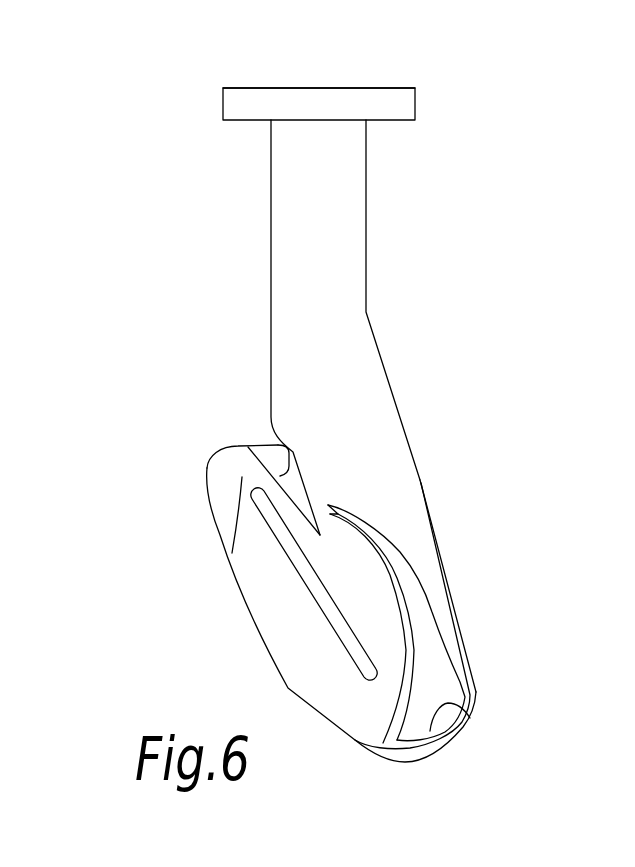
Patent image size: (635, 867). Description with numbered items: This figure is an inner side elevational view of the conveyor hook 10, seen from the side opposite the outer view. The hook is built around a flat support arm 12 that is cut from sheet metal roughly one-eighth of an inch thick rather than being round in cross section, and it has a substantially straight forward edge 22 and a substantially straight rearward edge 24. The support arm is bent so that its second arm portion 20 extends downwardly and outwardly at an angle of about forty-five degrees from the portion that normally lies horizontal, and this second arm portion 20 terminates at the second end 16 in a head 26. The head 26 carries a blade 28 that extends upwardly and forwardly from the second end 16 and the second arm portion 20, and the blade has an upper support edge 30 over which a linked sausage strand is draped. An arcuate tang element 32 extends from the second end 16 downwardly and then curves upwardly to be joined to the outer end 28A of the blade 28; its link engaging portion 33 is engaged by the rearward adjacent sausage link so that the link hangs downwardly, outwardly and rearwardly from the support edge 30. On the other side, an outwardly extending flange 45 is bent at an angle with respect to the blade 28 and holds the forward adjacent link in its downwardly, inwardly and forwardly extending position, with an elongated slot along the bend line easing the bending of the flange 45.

The conveyor hook 10 is at (510, 132).
The support arm 12 is at (270, 270).
The second end 16 is at (372, 495).
The second arm portion 20 is at (297, 390).
The forward edge 22 is at (415, 100).
The rearward edge 24 is at (223, 100).
The head 26 is at (155, 454).
The blade 28 is at (372, 625).
The outer end of the blade 28A is at (222, 447).
The upper support edge 30 is at (248, 448).
The arcuate tang element 32 is at (473, 685).
The link engaging portion 33 is at (465, 712).
The flange 45 is at (278, 615).